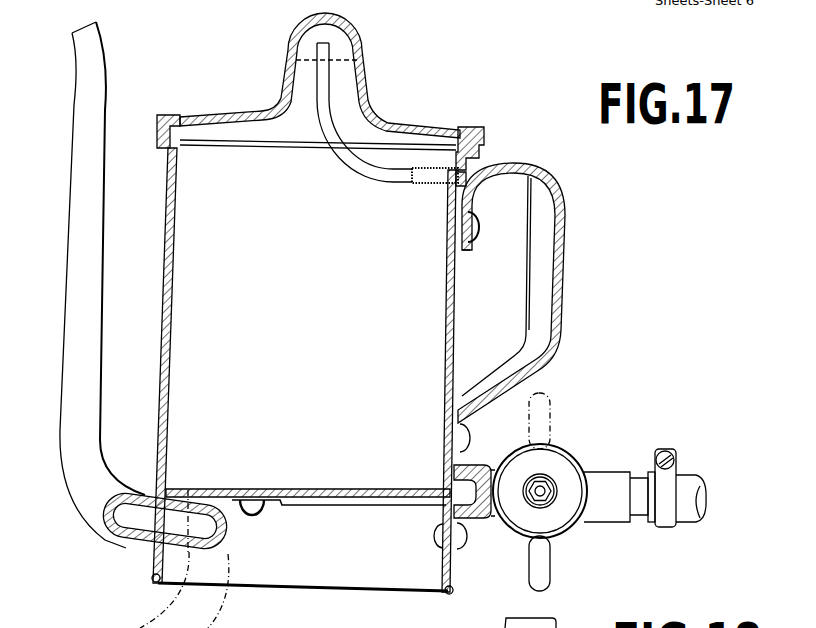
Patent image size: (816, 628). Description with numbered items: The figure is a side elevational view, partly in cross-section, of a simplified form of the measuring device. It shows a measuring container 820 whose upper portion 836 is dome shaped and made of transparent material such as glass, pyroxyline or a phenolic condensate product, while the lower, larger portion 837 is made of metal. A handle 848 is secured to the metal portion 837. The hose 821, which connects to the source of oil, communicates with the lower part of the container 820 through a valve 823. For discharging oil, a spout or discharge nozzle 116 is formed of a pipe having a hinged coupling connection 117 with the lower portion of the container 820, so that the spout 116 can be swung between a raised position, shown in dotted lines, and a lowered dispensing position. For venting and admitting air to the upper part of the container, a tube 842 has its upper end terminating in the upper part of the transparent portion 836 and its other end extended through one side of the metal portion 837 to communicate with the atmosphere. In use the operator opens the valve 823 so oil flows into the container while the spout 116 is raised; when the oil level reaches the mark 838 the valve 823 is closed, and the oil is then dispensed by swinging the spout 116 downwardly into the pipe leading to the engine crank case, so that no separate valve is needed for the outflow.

The spout 116 is at (98, 262).
The hinged coupling connection 117 is at (226, 544).
The measuring container 820 is at (459, 289).
The hose 821 is at (690, 480).
The valve 823 is at (565, 448).
The upper portion 836 is at (364, 93).
The lower portion 837 is at (440, 327).
The mark 838 is at (296, 58).
The tube 842 is at (410, 186).
The handle 848 is at (564, 229).